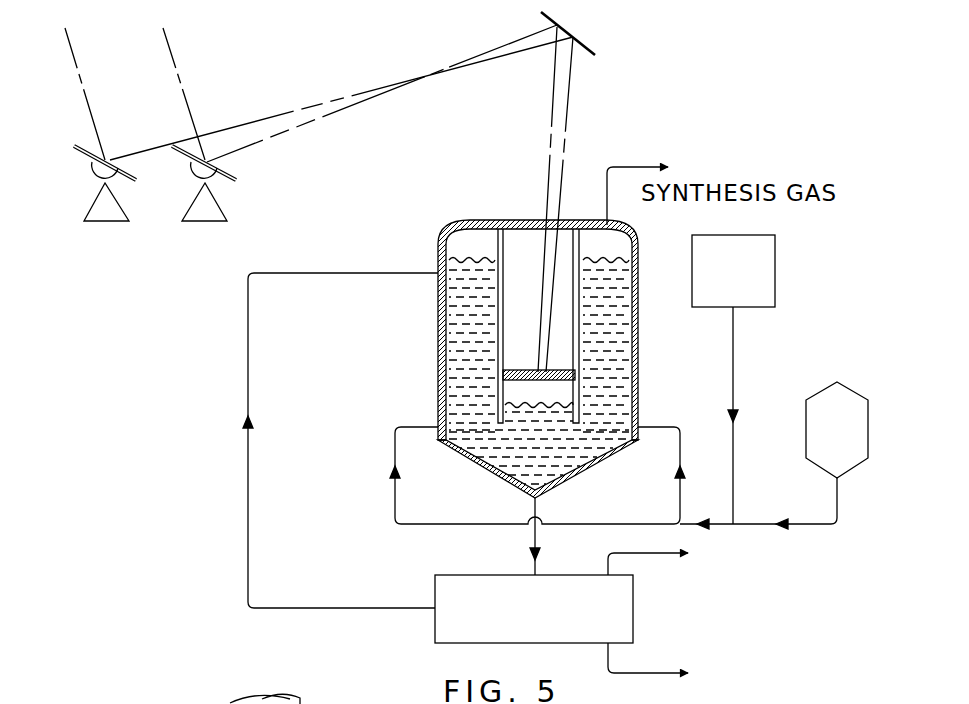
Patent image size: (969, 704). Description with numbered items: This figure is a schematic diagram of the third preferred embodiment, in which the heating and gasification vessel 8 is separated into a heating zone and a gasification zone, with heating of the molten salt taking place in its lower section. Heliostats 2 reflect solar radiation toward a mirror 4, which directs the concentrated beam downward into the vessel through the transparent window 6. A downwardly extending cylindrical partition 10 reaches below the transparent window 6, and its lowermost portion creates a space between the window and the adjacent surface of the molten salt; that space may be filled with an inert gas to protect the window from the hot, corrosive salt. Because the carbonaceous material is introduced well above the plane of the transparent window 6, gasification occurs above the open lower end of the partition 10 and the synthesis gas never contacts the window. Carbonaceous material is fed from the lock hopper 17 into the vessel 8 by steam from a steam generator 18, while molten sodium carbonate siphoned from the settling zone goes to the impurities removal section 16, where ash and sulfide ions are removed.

The heliostat 2 is at (100, 196).
The mirror 4 is at (578, 44).
The transparent window 6 is at (531, 367).
The heating and gasification vessel 8 is at (639, 297).
The cylindrical partition 10 is at (498, 397).
The impurities removal section 16 is at (436, 580).
The carbonaceous material lock hopper 17 is at (868, 428).
The steam generator 18 is at (775, 258).